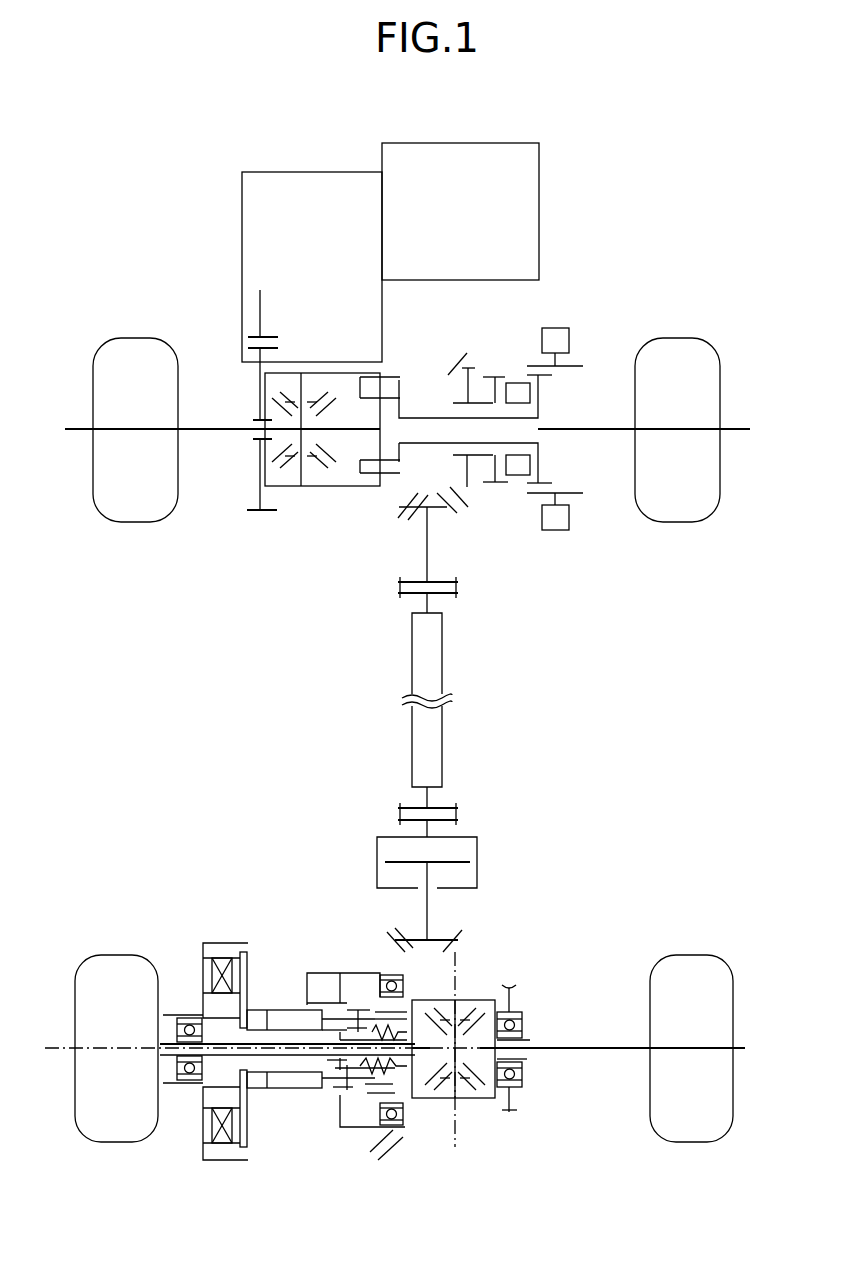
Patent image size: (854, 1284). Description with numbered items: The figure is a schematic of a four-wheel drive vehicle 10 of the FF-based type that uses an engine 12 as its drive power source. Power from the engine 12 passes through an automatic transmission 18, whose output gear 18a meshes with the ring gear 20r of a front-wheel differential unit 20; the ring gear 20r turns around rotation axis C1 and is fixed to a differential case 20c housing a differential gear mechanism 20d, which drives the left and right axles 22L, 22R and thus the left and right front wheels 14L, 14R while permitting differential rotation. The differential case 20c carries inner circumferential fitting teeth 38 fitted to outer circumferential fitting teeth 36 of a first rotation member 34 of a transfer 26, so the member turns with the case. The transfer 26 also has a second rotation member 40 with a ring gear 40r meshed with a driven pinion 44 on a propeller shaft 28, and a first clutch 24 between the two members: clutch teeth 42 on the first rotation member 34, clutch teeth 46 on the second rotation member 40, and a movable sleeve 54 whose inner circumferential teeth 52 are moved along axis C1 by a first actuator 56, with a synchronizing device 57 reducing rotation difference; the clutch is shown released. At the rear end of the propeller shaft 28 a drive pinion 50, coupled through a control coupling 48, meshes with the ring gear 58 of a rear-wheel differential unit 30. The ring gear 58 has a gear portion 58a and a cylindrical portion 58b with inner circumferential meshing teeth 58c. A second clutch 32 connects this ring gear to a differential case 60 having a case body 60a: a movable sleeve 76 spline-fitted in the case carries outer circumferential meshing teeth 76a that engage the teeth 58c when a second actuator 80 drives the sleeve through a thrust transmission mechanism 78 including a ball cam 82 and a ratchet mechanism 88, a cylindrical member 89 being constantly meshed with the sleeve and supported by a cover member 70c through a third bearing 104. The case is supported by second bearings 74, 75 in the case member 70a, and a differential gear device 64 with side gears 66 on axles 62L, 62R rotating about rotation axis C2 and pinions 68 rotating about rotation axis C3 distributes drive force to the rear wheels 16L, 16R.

The four-wheel drive vehicle 10 is at (623, 173).
The engine 12 is at (450, 160).
The left front wheel 14L is at (128, 352).
The right front wheel 14R is at (675, 352).
The left rear wheel 16L is at (108, 972).
The right rear wheel 16R is at (688, 972).
The automatic transmission 18 is at (320, 192).
The output gear 18a is at (275, 332).
The front-wheel differential unit 20 is at (305, 520).
The differential case 20c is at (325, 490).
The differential gear mechanism 20d is at (290, 402).
The ring gear 20r is at (255, 518).
The left axle 22L is at (213, 433).
The right axle 22R is at (603, 433).
The first clutch 24 is at (512, 497).
The transfer 26 is at (473, 512).
The propeller shaft 28 is at (430, 690).
The rear-wheel differential unit 30 is at (290, 905).
The second clutch 32 is at (320, 1005).
The first rotation member 34 is at (422, 410).
The outer circumferential fitting teeth 36 is at (365, 392).
The inner circumferential fitting teeth 38 is at (398, 385).
The second rotation member 40 is at (476, 370).
The ring gear 40r is at (456, 368).
The clutch teeth 42 is at (545, 377).
The driven pinion 44 is at (400, 510).
The clutch teeth 46 is at (494, 377).
The coupling 48 is at (480, 865).
The drive pinion 50 is at (462, 948).
The inner circumferential teeth 52 is at (582, 372).
The movable sleeve 54 is at (575, 356).
The first actuator 56 is at (555, 335).
The synchronizing device 57 is at (518, 390).
The ring gear 58 is at (386, 1157).
The gear portion 58a is at (392, 935).
The cylindrical portion 58b is at (350, 972).
The inner circumferential meshing teeth 58c is at (330, 1100).
The differential case 60 is at (468, 1103).
The case body 60a is at (445, 1105).
The left axle 62L is at (168, 1043).
The right axle 62R is at (598, 1046).
The differential gear device 64 is at (476, 980).
The side gears 66 is at (522, 1060).
The pinions 68 is at (440, 1082).
The case member 70a is at (514, 1108).
The cover member 70c is at (232, 945).
The second bearing 74 is at (366, 1130).
The second bearing 75 is at (520, 1028).
The movable sleeve 76 is at (376, 1020).
The outer circumferential meshing teeth 76a is at (375, 1092).
The thrust transmission mechanism 78 is at (265, 1000).
The second actuator 80 is at (208, 1135).
The ball cam 82 is at (252, 1080).
The ratchet mechanism 88 is at (295, 1080).
The cylindrical member 89 is at (222, 1058).
The third bearing 104 is at (172, 1068).
The rotation axis C1 is at (150, 428).
The rotation axis C2 is at (72, 1045).
The rotation axis C3 is at (447, 990).